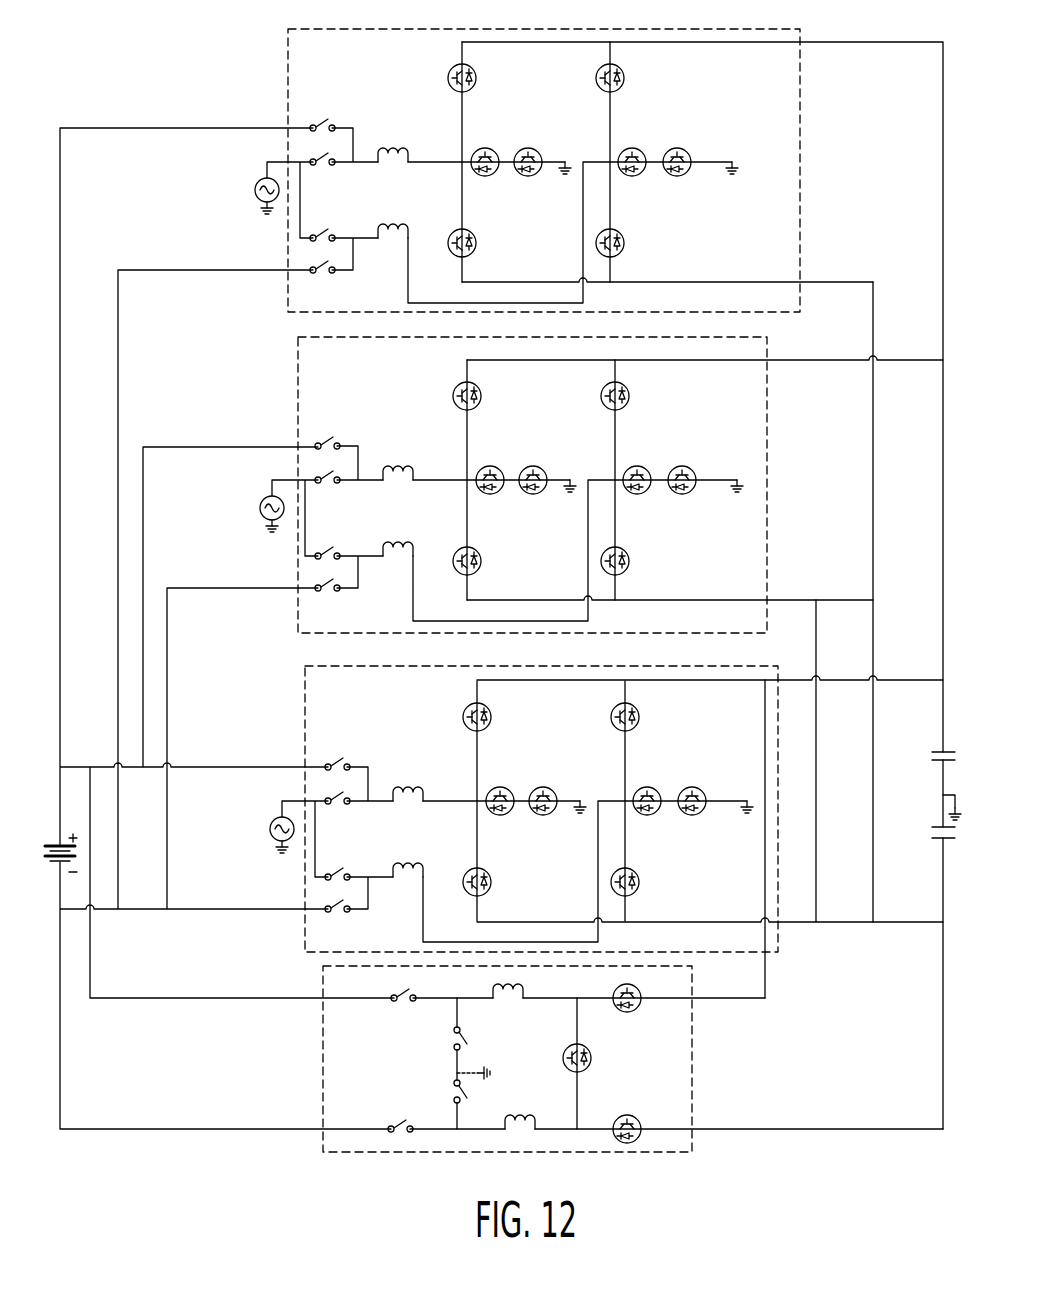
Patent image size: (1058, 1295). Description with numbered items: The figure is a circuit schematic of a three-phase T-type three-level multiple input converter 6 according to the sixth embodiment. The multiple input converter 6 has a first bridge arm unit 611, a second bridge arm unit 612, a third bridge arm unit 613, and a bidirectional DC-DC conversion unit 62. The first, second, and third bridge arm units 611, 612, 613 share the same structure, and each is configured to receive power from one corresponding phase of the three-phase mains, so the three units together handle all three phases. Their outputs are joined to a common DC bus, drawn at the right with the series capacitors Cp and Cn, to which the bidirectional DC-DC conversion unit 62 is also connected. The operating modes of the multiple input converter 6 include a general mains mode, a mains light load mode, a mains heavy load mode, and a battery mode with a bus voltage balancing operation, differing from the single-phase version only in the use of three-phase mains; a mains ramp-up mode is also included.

The multiple input converter 6 is at (80, 81).
The first bridge arm unit 611 is at (800, 92).
The second bridge arm unit 612 is at (767, 407).
The third bridge arm unit 613 is at (778, 940).
The bidirectional DC-DC conversion unit 62 is at (692, 1137).
The positive DC link capacitor Cp is at (934, 772).
The negative DC link capacitor Cn is at (930, 840).